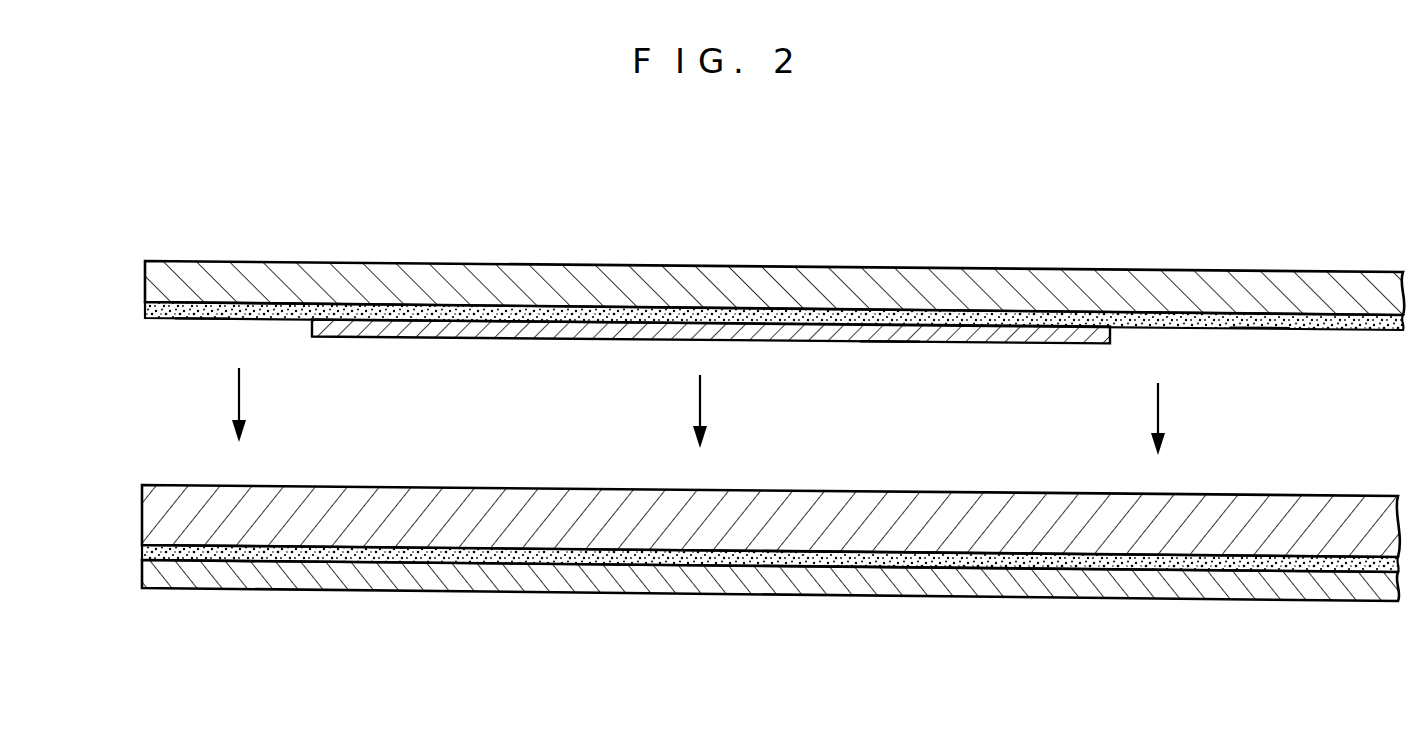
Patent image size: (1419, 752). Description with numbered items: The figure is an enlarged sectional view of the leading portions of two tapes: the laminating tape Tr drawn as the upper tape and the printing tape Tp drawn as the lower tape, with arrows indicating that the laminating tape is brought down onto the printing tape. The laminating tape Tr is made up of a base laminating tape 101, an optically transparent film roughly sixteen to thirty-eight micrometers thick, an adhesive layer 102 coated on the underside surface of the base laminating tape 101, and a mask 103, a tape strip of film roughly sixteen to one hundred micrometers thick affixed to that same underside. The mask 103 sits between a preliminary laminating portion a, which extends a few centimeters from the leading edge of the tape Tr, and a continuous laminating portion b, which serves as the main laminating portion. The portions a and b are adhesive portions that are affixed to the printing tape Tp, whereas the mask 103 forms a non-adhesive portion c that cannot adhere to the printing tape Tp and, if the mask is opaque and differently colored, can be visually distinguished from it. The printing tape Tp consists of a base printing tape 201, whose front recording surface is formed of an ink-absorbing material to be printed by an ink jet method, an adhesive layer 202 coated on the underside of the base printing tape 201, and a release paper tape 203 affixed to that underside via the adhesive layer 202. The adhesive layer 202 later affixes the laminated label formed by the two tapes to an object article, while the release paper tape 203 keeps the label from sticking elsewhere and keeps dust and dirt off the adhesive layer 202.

The laminating tape Tr is at (150, 246).
The printing tape Tp is at (151, 476).
The base laminating tape 101 is at (963, 274).
The adhesive layer 102 is at (1073, 318).
The mask 103 is at (792, 338).
The base printing tape 201 is at (995, 506).
The adhesive layer 202 is at (714, 566).
The release paper tape 203 is at (872, 590).
The preliminary laminating portion a is at (203, 332).
The continuous laminating portion b is at (1258, 334).
The non-adhesive portion c is at (890, 348).